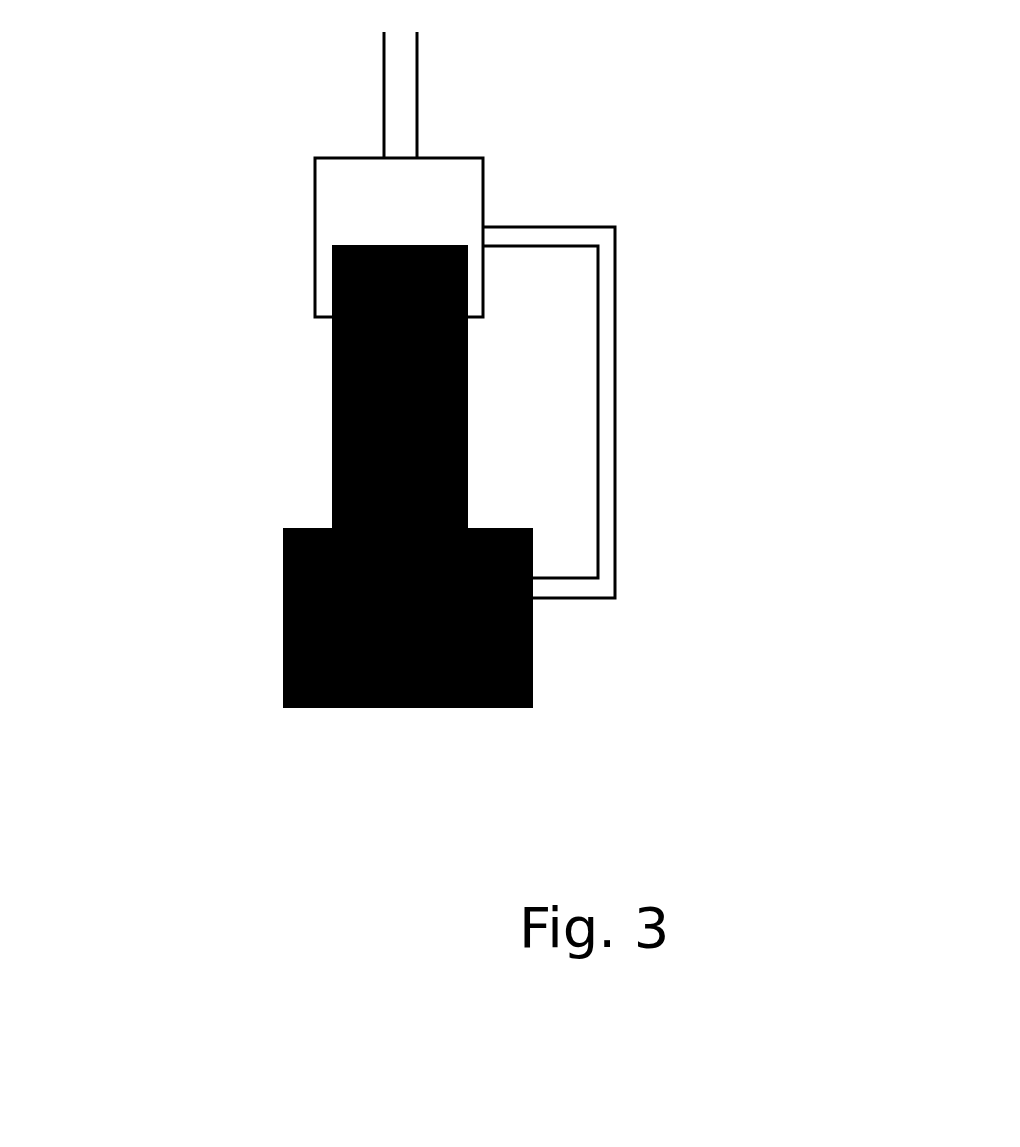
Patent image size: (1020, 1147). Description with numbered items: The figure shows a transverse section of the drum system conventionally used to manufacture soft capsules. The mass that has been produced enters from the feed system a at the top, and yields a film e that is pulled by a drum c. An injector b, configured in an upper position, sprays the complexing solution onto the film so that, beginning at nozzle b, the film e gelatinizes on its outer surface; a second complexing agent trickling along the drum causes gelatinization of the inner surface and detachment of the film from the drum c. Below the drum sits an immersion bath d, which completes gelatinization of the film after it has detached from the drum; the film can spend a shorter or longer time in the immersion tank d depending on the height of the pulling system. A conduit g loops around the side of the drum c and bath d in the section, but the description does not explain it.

The feed system a is at (400, 87).
The injector b is at (386, 230).
The drum c is at (334, 425).
The immersion bath d is at (270, 653).
The film e is at (334, 352).
The recirculation conduit g is at (632, 403).